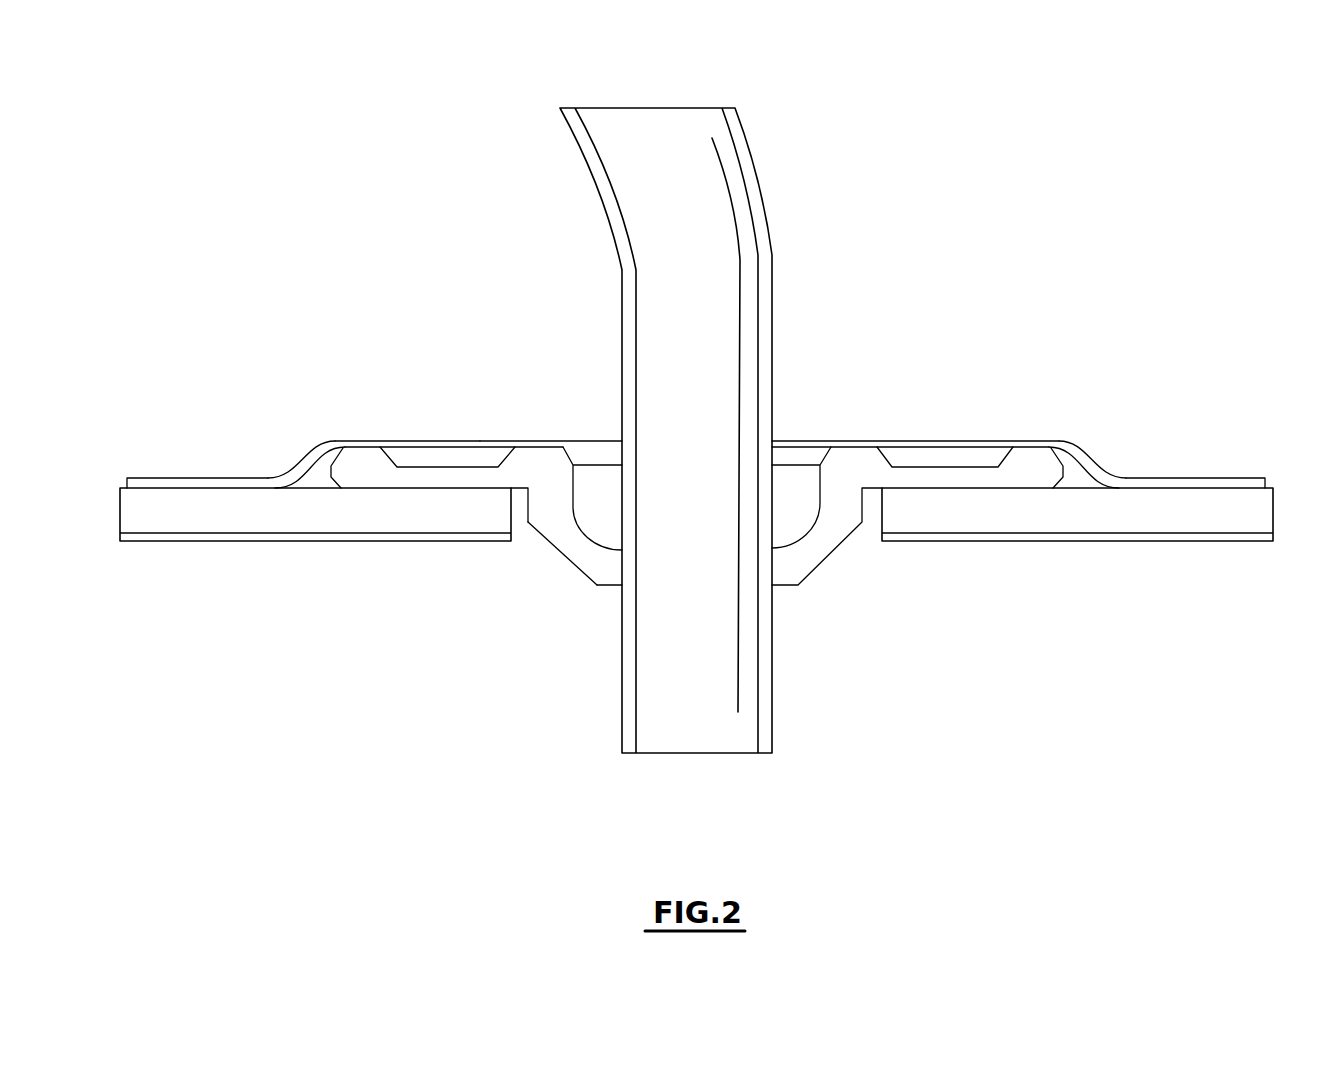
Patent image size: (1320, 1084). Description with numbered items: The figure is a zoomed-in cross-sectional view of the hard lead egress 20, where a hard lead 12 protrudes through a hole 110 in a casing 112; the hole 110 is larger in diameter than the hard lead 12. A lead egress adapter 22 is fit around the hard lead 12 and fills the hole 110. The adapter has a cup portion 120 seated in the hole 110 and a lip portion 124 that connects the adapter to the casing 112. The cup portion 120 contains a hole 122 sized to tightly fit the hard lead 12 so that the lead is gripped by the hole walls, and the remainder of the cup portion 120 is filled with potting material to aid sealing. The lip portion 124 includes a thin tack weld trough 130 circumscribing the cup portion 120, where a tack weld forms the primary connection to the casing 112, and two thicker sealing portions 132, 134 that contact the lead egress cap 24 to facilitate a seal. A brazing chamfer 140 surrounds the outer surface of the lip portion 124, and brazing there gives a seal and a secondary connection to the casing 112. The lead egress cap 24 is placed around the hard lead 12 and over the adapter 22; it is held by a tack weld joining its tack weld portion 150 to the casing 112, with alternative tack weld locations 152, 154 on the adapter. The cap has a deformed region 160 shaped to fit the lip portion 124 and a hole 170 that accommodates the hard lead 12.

The hard lead egress 20 is at (1070, 175).
The hard lead 12 is at (747, 237).
The lead egress adapter 22 is at (810, 548).
The lead egress cap 24 is at (805, 440).
The hole 110 is at (523, 523).
The casing 112 is at (190, 520).
The cup portion 120 is at (600, 518).
The hole 122 is at (620, 593).
The lip portion 124 is at (1028, 468).
The tack weld trough 130 is at (438, 467).
The sealing portion 132 is at (860, 463).
The sealing portion 134 is at (1043, 467).
The brazing chamfer 140 is at (312, 467).
The tack weld portion 150 is at (182, 478).
The alternative tack weld location 152 is at (358, 440).
The alternative tack weld location 154 is at (540, 440).
The deformed region 160 is at (1122, 477).
The hole 170 is at (772, 440).